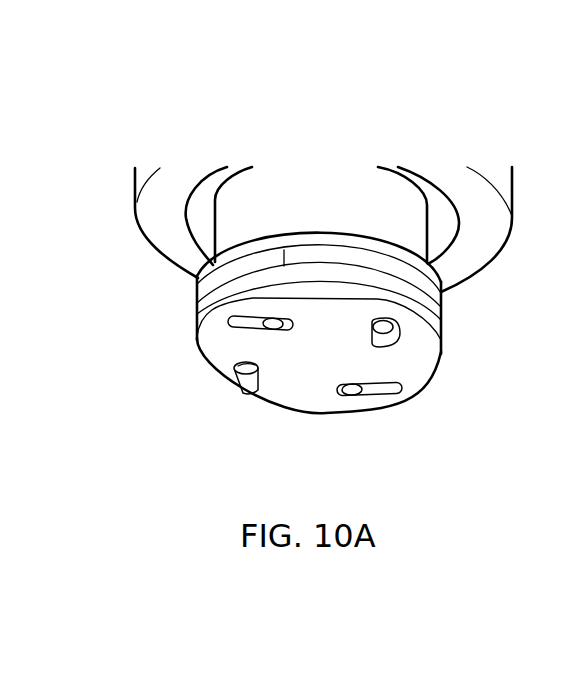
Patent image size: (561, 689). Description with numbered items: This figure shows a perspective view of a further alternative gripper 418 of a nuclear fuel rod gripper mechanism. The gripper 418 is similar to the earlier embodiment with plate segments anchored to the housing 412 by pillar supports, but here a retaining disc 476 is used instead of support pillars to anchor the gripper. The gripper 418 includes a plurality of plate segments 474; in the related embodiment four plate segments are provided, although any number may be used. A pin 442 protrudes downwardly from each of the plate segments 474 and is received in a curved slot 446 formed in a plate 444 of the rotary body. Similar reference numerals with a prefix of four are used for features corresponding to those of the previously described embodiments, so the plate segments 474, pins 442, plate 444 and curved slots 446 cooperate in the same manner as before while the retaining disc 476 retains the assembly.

The housing 412 is at (490, 177).
The gripper 418 is at (145, 372).
The pin 442 is at (235, 377).
The plate 444 is at (323, 403).
The curved slot 446 is at (405, 394).
The plate segment 474 is at (438, 297).
The retaining disc 476 is at (212, 298).